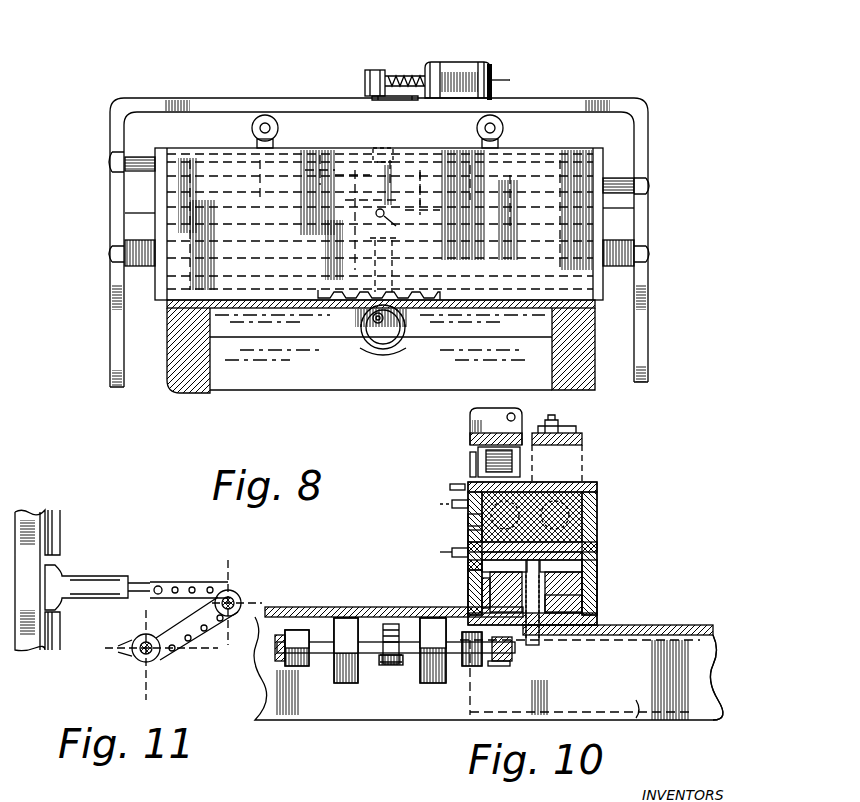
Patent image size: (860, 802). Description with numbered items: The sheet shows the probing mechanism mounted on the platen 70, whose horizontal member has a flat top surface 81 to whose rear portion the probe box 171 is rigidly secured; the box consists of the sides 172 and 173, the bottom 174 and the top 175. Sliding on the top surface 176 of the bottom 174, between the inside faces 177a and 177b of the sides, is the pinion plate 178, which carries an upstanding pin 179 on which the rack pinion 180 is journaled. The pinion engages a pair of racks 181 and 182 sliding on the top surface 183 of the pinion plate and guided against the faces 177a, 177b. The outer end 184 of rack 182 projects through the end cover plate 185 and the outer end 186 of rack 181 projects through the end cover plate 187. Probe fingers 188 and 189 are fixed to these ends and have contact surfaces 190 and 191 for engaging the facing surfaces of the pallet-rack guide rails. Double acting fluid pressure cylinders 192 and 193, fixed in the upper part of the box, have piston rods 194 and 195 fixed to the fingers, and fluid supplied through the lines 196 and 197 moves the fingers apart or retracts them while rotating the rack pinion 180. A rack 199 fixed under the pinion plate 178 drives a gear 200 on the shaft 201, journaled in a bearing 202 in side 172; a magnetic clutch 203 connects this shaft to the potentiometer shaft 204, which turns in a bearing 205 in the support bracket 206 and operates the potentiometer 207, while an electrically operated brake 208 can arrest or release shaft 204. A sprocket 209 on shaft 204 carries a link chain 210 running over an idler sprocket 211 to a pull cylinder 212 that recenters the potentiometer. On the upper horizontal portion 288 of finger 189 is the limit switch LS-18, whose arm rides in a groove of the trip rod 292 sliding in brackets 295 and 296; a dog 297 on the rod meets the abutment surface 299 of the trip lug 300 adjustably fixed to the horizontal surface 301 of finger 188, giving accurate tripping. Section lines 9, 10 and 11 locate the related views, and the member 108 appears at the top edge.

In FIG. 8, the platen 70 is at (195, 393).
In FIG. 10, the platen 70 is at (676, 624).
In FIG. 11, the platen 70 is at (30, 518).
In FIG. 10, the top surface 81 is at (315, 607).
In FIG. 8, the upper member 108 is at (18, 6).
In FIG. 8, the probe box 171 is at (190, 185).
In FIG. 10, the probe box 171 is at (600, 495).
In FIG. 10, the side 172 is at (470, 536).
In FIG. 10, the side 173 is at (596, 542).
In FIG. 10, the bottom 174 is at (575, 640).
In FIG. 10, the top 175 is at (583, 486).
In FIG. 10, the top surface 176 is at (597, 614).
In FIG. 10, the inside face 177a is at (466, 566).
In FIG. 10, the inside face 177b is at (595, 558).
In FIG. 8, the pinion plate 178 is at (326, 315).
In FIG. 10, the pinion plate 178 is at (592, 596).
In FIG. 8, the upstanding pin 179 is at (394, 250).
In FIG. 10, the upstanding pin 179 is at (486, 584).
In FIG. 8, the rack pinion 180 is at (350, 265).
In FIG. 10, the rack pinion 180 is at (522, 584).
In FIG. 8, the rack 181 is at (152, 280).
In FIG. 10, the rack 181 is at (472, 595).
In FIG. 8, the rack 182 is at (618, 270).
In FIG. 10, the rack 182 is at (594, 574).
In FIG. 10, the top surface 183 is at (544, 582).
In FIG. 8, the outer end 184 is at (645, 252).
In FIG. 8, the end cover plate 185 is at (605, 210).
In FIG. 8, the outer end 186 is at (120, 266).
In FIG. 8, the end cover plate 187 is at (128, 212).
In FIG. 8, the probe finger 188 is at (108, 334).
In FIG. 10, the probe finger 188 is at (583, 440).
In FIG. 8, the probe finger 189 is at (650, 336).
In FIG. 10, the probe finger 189 is at (466, 441).
In FIG. 8, the contact surface 190 is at (110, 378).
In FIG. 8, the contact surface 191 is at (650, 378).
In FIG. 10, the contact surface 191 is at (638, 720).
In FIG. 8, the double acting fluid pressure cylinder 192 is at (235, 160).
In FIG. 10, the double acting fluid pressure cylinder 192 is at (598, 498).
In FIG. 8, the double acting fluid pressure cylinder 193 is at (530, 165).
In FIG. 10, the double acting fluid pressure cylinder 193 is at (450, 503).
In FIG. 8, the piston rod 194 is at (125, 160).
In FIG. 10, the piston rod 194 is at (598, 518).
In FIG. 8, the piston rod 195 is at (625, 178).
In FIG. 10, the piston rod 195 is at (470, 520).
In FIG. 8, the line 196 is at (395, 230).
In FIG. 10, the line 196 is at (450, 553).
In FIG. 8, the line 197 is at (383, 150).
In FIG. 10, the line 197 is at (455, 484).
In FIG. 10, the rack 199 is at (515, 638).
In FIG. 8, the gear 200 is at (366, 345).
In FIG. 10, the gear 200 is at (490, 666).
In FIG. 8, the shaft 201 is at (400, 324).
In FIG. 10, the shaft 201 is at (514, 658).
In FIG. 10, the bearing 202 is at (470, 650).
In FIG. 8, the magnetic clutch 203 is at (392, 352).
In FIG. 10, the magnetic clutch 203 is at (425, 676).
In FIG. 10, the potentiometer shaft 204 is at (415, 655).
In FIG. 10, the bearing 205 is at (262, 665).
In FIG. 10, the support bracket 206 is at (268, 632).
In FIG. 10, the potentiometer 207 is at (296, 652).
In FIG. 10, the electrically operated brake 208 is at (345, 660).
In FIG. 10, the sprocket 209 is at (388, 632).
In FIG. 11, the sprocket 209 is at (128, 650).
In FIG. 10, the link chain 210 is at (382, 664).
In FIG. 11, the link chain 210 is at (192, 650).
In FIG. 11, the idler sprocket 211 is at (215, 606).
In FIG. 11, the pull cylinder 212 is at (85, 582).
In FIG. 8, the upper horizontal portion 288 is at (590, 100).
In FIG. 10, the upper horizontal portion 288 is at (468, 426).
In FIG. 8, the trip rod 292 is at (460, 64).
In FIG. 8, the bracket 295 is at (490, 66).
In FIG. 8, the bracket 296 is at (388, 70).
In FIG. 10, the bracket 296 is at (470, 410).
In FIG. 8, the dog 297 is at (365, 84).
In FIG. 8, the abutment surface 299 is at (76, 6).
In FIG. 8, the trip lug 300 is at (370, 100).
In FIG. 10, the trip lug 300 is at (545, 420).
In FIG. 8, the horizontal surface 301 is at (200, 100).
In FIG. 10, the horizontal surface 301 is at (583, 428).
In FIG. 8, the limit switch LS-18 is at (436, 62).
In FIG. 8, the section line 9- 9 is at (330, 53).
In FIG. 8, the section line 10- 10 is at (378, 17).
In FIG. 10, the section line 11- 11 is at (365, 563).